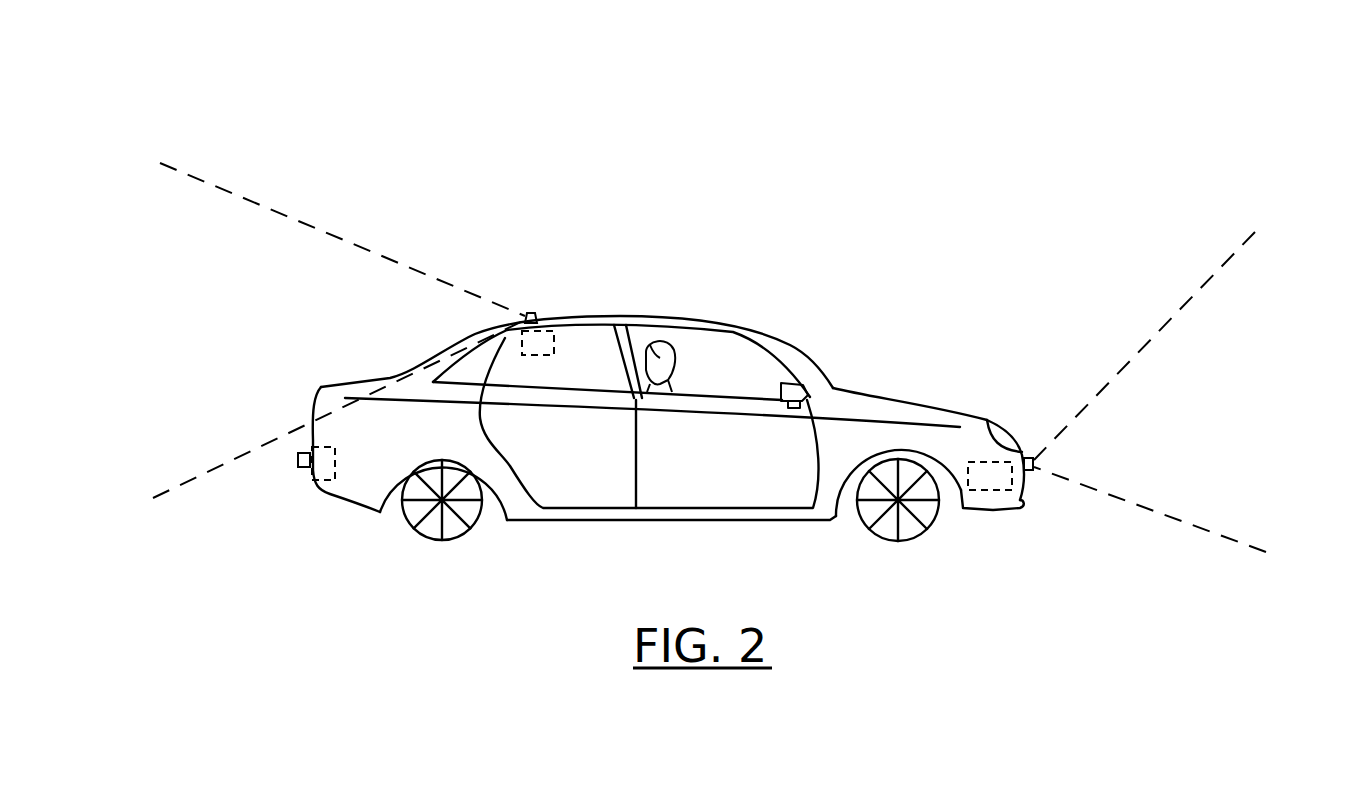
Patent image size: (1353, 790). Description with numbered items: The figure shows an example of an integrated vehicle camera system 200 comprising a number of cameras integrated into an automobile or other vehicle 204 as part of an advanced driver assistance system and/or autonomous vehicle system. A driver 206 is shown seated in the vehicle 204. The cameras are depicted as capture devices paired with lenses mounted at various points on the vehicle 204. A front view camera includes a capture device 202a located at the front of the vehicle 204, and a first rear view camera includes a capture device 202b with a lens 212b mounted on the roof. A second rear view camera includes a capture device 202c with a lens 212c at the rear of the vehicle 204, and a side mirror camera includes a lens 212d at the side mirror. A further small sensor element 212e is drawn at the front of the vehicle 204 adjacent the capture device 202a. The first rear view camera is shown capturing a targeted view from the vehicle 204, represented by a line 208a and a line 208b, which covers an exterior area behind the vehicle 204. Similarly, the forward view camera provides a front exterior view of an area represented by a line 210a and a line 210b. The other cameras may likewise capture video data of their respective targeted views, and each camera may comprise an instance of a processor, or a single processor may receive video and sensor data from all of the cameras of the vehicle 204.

The integrated vehicle camera system 200 is at (478, 100).
The capture device 202a is at (993, 491).
The capture device 202b is at (547, 328).
The capture device 202c is at (330, 480).
The vehicle 204 is at (420, 360).
The driver 206 is at (663, 342).
The line 208a is at (347, 240).
The line 208b is at (220, 467).
The line 210a is at (1190, 300).
The line 210b is at (1188, 522).
The lens 212b is at (529, 313).
The lens 212c is at (298, 460).
The lens 212d is at (810, 405).
The front sensor 212e is at (1033, 468).